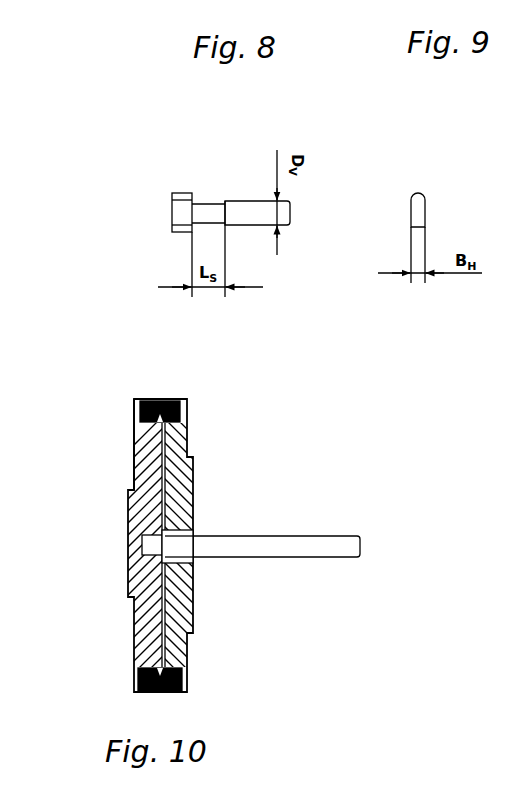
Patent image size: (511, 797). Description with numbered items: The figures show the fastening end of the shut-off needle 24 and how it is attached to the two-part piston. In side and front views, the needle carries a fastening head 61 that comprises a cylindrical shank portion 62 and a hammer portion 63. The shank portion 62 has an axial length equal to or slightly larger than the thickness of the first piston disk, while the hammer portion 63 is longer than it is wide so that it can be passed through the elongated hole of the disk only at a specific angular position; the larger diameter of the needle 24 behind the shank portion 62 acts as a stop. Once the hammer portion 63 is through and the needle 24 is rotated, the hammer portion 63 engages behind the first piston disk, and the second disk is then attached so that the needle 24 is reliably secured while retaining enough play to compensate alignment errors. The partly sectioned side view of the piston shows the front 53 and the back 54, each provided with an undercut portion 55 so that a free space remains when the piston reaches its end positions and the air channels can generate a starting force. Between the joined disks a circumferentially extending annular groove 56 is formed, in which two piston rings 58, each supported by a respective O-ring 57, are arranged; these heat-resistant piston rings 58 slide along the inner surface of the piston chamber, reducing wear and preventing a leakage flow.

In FIG. 8, the shut-off needle 24 is at (254, 210).
In FIG. 10, the shut-off needle 24 is at (282, 547).
In FIG. 10, the front of the piston 53 is at (195, 595).
In FIG. 10, the back of the piston 54 is at (135, 635).
In FIG. 10, the undercut portion 55 is at (196, 455).
In FIG. 10, the annular groove 56 is at (137, 428).
In FIG. 10, the O-ring 57 is at (183, 682).
In FIG. 10, the piston ring 58 is at (144, 379).
In FIG. 8, the fastening head 61 is at (203, 177).
In FIG. 9, the fastening head 61 is at (447, 174).
In FIG. 8, the cylindrical shank portion 62 is at (207, 210).
In FIG. 10, the cylindrical shank portion 62 is at (193, 533).
In FIG. 8, the hammer portion 63 is at (182, 213).
In FIG. 9, the hammer portion 63 is at (420, 215).
In FIG. 10, the hammer portion 63 is at (150, 545).